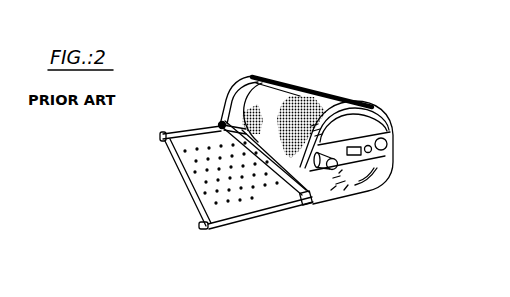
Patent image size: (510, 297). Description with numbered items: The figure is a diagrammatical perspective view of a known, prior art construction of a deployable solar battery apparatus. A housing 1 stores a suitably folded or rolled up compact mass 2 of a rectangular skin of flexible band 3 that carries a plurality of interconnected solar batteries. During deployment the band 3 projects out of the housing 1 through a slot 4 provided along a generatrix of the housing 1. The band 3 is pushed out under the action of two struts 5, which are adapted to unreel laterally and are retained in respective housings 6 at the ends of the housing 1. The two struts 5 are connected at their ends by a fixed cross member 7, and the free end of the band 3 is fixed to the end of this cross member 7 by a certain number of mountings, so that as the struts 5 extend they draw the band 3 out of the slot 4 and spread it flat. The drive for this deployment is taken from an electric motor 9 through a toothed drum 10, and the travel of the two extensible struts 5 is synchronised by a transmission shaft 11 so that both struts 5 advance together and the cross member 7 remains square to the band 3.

The housing 1 is at (314, 88).
The compact mass 2 is at (288, 95).
The band 3 is at (199, 146).
The slot 4 is at (259, 140).
The struts 5 is at (178, 134).
The housings 6 is at (249, 75).
The cross member 7 is at (184, 171).
The electric motor 9 is at (332, 170).
The toothed drum 10 is at (348, 103).
The transmission shaft 11 is at (336, 191).